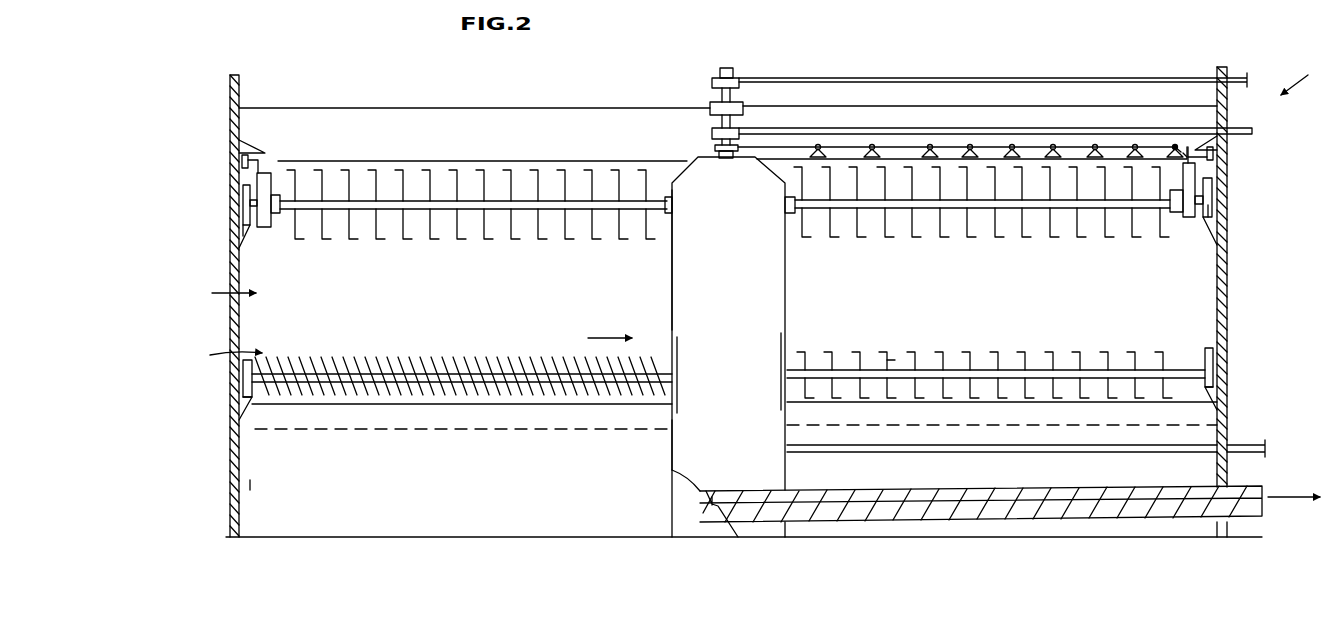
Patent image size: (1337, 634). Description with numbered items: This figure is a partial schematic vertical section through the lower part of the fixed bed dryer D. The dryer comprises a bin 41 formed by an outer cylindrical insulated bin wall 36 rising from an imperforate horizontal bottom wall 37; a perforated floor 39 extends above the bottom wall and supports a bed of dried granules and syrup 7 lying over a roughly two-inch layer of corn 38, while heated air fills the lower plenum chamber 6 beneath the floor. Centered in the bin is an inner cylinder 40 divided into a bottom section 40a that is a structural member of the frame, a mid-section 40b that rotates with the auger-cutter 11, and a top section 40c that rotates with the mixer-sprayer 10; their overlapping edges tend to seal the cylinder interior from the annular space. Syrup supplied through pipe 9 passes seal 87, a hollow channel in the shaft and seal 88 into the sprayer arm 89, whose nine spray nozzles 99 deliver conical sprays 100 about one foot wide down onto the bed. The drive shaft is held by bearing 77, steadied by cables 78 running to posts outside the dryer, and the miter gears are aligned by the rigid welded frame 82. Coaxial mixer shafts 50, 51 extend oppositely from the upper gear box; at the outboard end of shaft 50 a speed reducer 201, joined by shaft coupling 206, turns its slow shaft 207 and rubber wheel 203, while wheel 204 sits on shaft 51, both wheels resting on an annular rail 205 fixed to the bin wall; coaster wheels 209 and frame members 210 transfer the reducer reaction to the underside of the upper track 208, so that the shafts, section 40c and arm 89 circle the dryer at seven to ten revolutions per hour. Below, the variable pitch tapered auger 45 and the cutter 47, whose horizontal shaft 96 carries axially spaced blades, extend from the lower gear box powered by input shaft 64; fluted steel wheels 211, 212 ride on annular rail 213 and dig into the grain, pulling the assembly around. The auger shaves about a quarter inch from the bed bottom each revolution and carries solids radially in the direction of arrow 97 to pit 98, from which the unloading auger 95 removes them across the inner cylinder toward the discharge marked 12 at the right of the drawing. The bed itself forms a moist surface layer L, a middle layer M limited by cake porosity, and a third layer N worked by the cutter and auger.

The lower plenum chamber 6 is at (621, 471).
The bed of dried granules and syrup 7 is at (732, 223).
The pipe 9 is at (830, 78).
The mixer-sprayer 10 is at (478, 238).
The auger-cutter 11 is at (520, 370).
The discharge direction 12 is at (1306, 502).
The outer cylindrical insulated bin wall 36 is at (1228, 296).
The imperforate horizontal bottom wall 37 is at (316, 537).
The layer of corn 38 is at (384, 417).
The perforated floor 39 is at (433, 430).
The inner cylinder 40 is at (786, 425).
The bottom section 40a is at (677, 454).
The mid-section 40b is at (678, 362).
The top section 40c is at (674, 286).
The bin 41 is at (1228, 323).
The variable pitch tapered auger 45 is at (466, 370).
The cutter 47 is at (1042, 340).
The mixer shaft 50 is at (878, 218).
The mixer shaft 51 is at (342, 218).
The input shaft 64 is at (1246, 446).
The bearing 77 is at (710, 106).
The cables 78 is at (538, 108).
The frame 82 is at (712, 133).
The seal 87 is at (724, 66).
The seal 88 is at (715, 148).
The sprayer arm 89 is at (798, 147).
The unloading auger 95 is at (1066, 490).
The shaft 96 is at (896, 370).
The arrow 97 is at (600, 338).
The pit 98 is at (705, 503).
The spray nozzles 99 is at (1014, 145).
The sprays 100 is at (960, 146).
The speed reducer 201 is at (264, 228).
The wheel 203 is at (1213, 192).
The wheel 204 is at (243, 198).
The annular rail 205 is at (244, 231).
The shaft coupling 206 is at (1177, 213).
The slow shaft 207 is at (1212, 212).
The annular track 208 is at (252, 146).
The coaster wheels 209 is at (1214, 153).
The frame members 210 is at (258, 160).
The steel wheel 211 is at (243, 379).
The steel wheel 212 is at (1208, 348).
The annular rail 213 is at (243, 400).
The surface layer L is at (375, 161).
The middle layer M is at (226, 295).
The third layer N is at (226, 358).
The fixed bed dryer D is at (1304, 79).